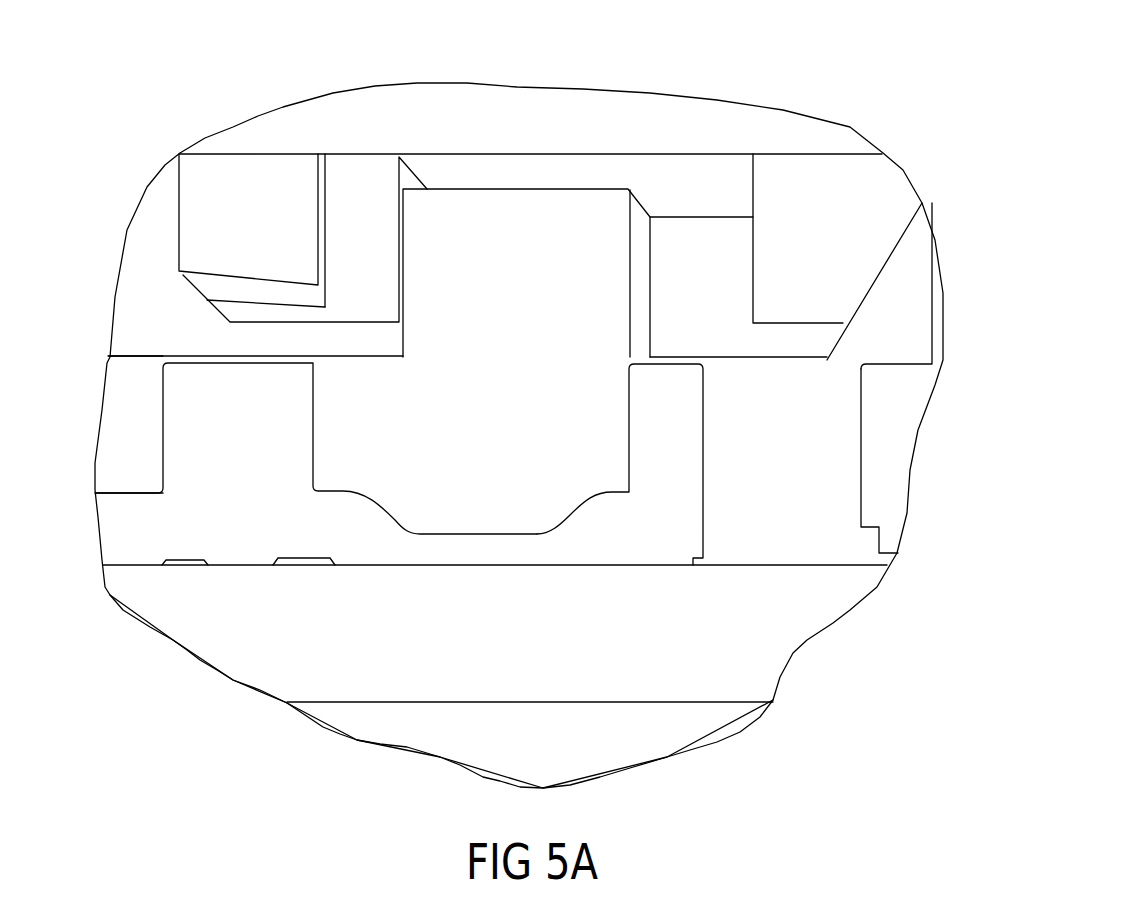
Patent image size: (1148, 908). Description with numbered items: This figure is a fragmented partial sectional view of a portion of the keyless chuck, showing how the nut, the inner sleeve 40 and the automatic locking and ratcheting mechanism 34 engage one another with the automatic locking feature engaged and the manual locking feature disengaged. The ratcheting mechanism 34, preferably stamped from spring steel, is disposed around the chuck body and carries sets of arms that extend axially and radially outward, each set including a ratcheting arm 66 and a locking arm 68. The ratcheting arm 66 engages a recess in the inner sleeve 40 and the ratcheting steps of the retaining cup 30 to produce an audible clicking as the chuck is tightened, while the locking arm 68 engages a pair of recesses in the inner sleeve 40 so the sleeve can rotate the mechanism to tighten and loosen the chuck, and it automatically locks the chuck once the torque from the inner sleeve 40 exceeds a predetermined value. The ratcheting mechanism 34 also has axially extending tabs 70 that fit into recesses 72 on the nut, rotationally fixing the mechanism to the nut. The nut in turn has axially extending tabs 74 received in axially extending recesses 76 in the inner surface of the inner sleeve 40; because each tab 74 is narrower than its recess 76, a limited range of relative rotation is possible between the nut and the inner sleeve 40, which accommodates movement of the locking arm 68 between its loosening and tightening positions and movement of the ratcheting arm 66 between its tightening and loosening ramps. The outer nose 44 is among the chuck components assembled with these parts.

The retaining cup 30 is at (272, 620).
The automatic locking and ratcheting mechanism 34 is at (128, 529).
The inner sleeve 40 is at (815, 203).
The outer nose 44 is at (367, 118).
The ratcheting arm 66 is at (672, 449).
The locking arm 68 is at (887, 463).
The tab 70 is at (220, 437).
The recess 72 is at (163, 408).
The tab 74 is at (482, 223).
The recess 76 is at (688, 253).